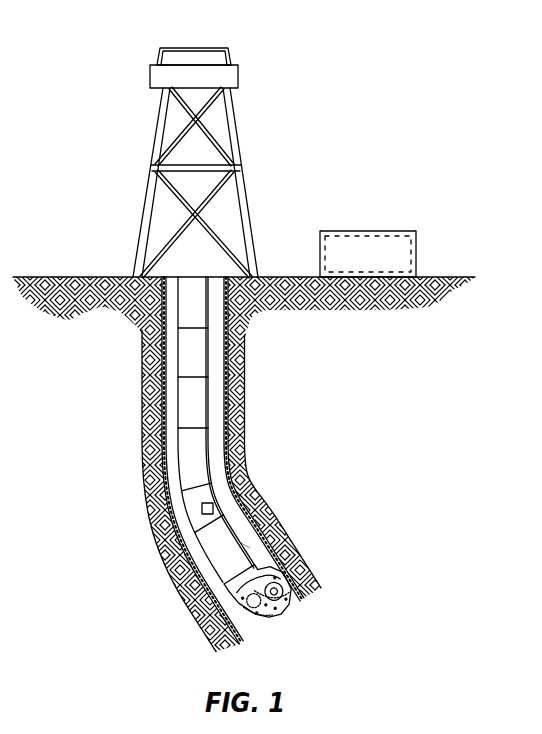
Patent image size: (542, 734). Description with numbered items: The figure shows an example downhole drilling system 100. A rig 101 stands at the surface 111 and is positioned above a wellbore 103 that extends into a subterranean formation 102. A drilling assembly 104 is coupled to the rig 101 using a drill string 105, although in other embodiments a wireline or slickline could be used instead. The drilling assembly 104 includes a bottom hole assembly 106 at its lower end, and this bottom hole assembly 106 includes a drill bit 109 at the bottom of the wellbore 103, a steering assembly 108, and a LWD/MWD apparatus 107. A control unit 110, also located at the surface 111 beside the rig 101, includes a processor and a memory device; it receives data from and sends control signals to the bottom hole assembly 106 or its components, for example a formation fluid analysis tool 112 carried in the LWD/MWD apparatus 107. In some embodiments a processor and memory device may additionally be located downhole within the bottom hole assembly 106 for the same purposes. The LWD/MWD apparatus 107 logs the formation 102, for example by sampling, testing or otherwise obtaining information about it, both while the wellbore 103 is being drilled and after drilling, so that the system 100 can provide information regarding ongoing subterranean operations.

The downhole drilling system 100 is at (368, 55).
The rig 101 is at (238, 75).
The subterranean formation 102 is at (165, 543).
The wellbore 103 is at (160, 350).
The drilling assembly 104 is at (158, 407).
The drill string 105 is at (210, 405).
The bottom hole assembly (BHA) 106 is at (224, 618).
The LWD/MWD apparatus 107 is at (245, 493).
The steering assembly 108 is at (245, 543).
The drill bit 109 is at (283, 612).
The control unit 110 is at (391, 267).
The surface 111 is at (448, 272).
The formation fluid analysis tool 112 is at (201, 509).